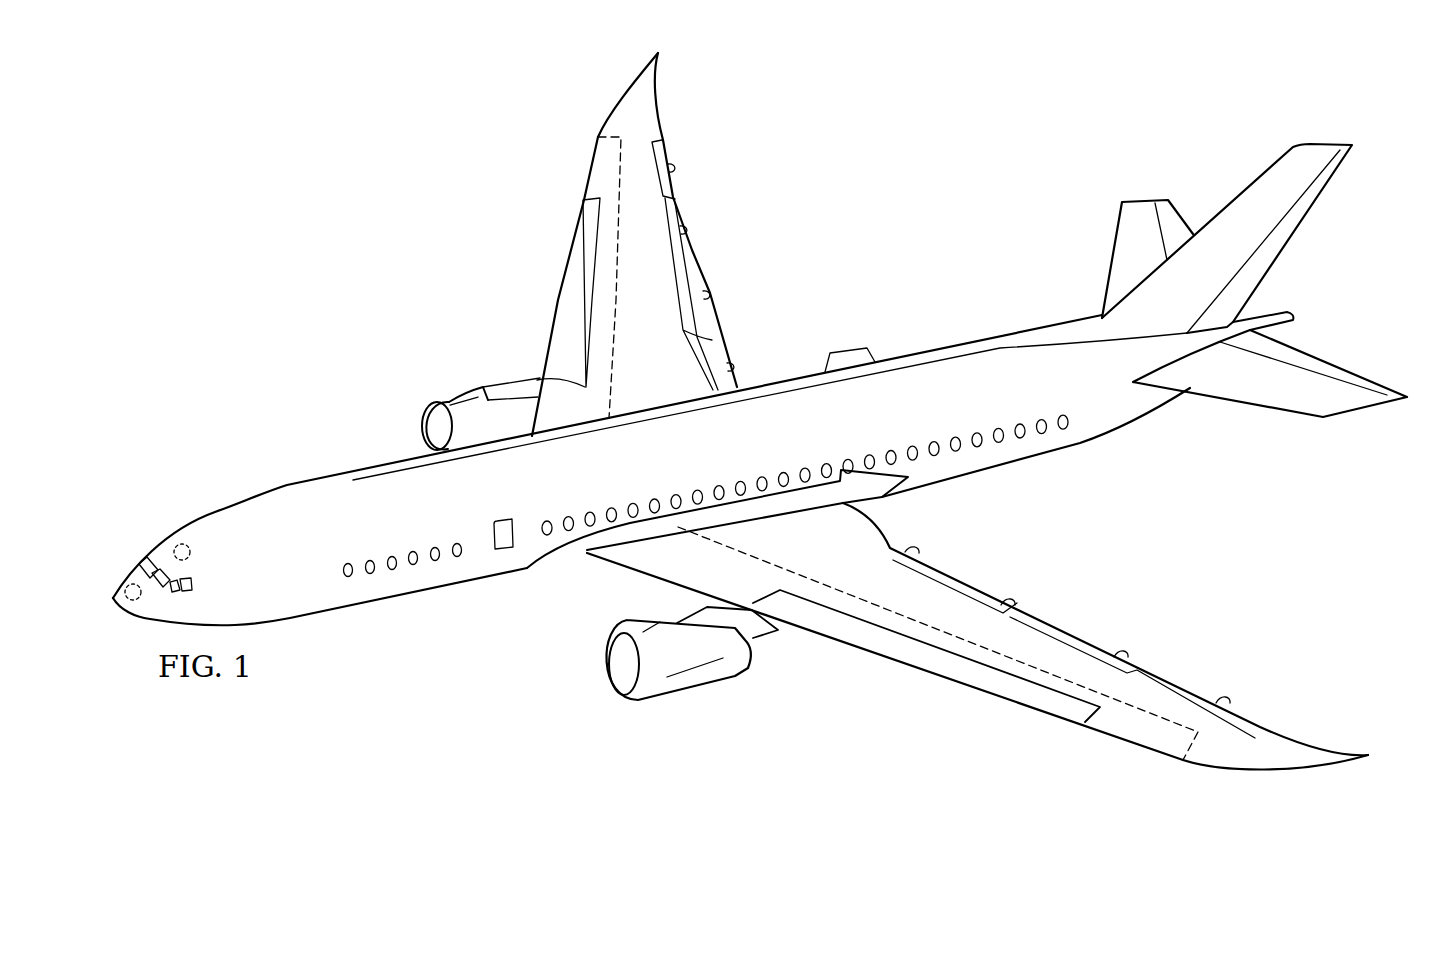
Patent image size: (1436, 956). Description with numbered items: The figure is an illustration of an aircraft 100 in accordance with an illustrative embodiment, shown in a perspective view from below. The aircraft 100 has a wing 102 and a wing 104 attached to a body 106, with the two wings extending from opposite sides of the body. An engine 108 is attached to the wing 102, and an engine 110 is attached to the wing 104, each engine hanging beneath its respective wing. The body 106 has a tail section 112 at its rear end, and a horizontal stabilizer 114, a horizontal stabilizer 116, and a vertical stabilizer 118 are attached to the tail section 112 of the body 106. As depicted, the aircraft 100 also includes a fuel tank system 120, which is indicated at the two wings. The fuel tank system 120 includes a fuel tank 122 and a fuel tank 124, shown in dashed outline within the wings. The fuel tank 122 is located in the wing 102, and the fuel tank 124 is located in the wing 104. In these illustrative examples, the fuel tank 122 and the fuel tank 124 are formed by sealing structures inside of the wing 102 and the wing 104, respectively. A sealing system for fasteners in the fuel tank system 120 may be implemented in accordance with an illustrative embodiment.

The aircraft 100 is at (404, 285).
The wing 102 is at (657, 90).
The wing 104 is at (1220, 766).
The body 106 is at (287, 486).
The engine 108 is at (460, 383).
The engine 110 is at (690, 697).
The tail section 112 is at (1172, 455).
The horizontal stabilizer 114 is at (1112, 258).
The horizontal stabilizer 116 is at (1275, 408).
The vertical stabilizer 118 is at (1300, 228).
The fuel tank system 120 is at (525, 268).
The fuel tank 122 is at (597, 175).
The fuel tank 124 is at (1145, 738).